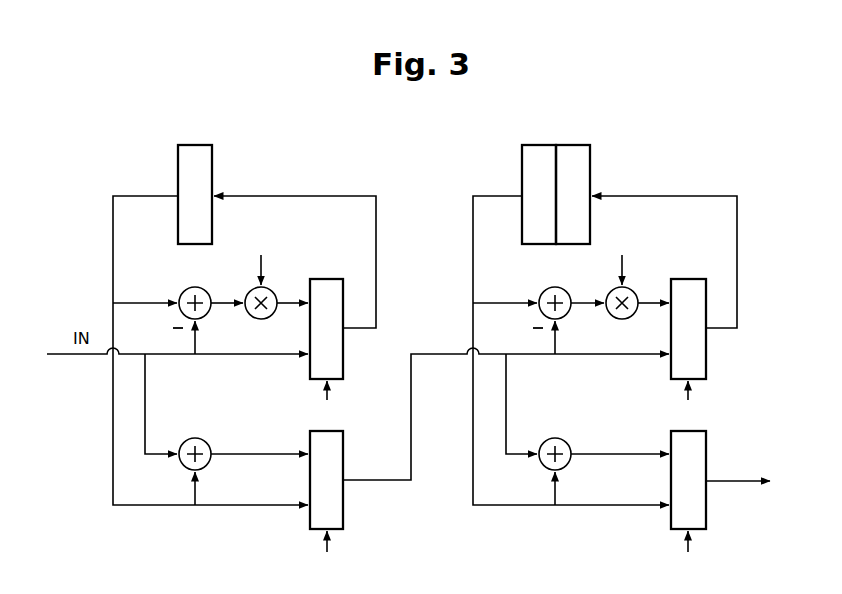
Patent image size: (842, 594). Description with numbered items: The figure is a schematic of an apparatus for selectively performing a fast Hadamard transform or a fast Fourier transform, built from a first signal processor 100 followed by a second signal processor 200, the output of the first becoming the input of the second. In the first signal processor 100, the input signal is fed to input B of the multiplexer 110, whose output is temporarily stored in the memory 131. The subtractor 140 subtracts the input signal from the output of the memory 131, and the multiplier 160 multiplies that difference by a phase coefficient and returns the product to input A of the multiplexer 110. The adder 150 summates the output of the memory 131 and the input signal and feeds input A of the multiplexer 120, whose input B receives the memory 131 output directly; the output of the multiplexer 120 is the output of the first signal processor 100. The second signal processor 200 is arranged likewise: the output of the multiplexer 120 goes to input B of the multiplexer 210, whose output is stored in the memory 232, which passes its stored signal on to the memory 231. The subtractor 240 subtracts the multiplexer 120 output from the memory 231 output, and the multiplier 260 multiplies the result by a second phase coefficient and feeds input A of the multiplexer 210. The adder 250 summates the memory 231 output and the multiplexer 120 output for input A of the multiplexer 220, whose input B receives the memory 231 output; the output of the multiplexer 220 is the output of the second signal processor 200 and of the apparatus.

The first signal processor 100 is at (311, 137).
The multiplexer 110 is at (331, 270).
The multiplexer 120 is at (343, 500).
The memory 131 is at (196, 145).
The subtractor 140 is at (193, 288).
The adder 150 is at (193, 438).
The multiplier 160 is at (269, 290).
The second signal processor 200 is at (671, 138).
The multiplexer 210 is at (691, 279).
The multiplexer 220 is at (706, 500).
The memory 231 is at (538, 145).
The memory 232 is at (581, 145).
The subtractor 240 is at (553, 288).
The adder 250 is at (553, 438).
The multiplier 260 is at (631, 290).